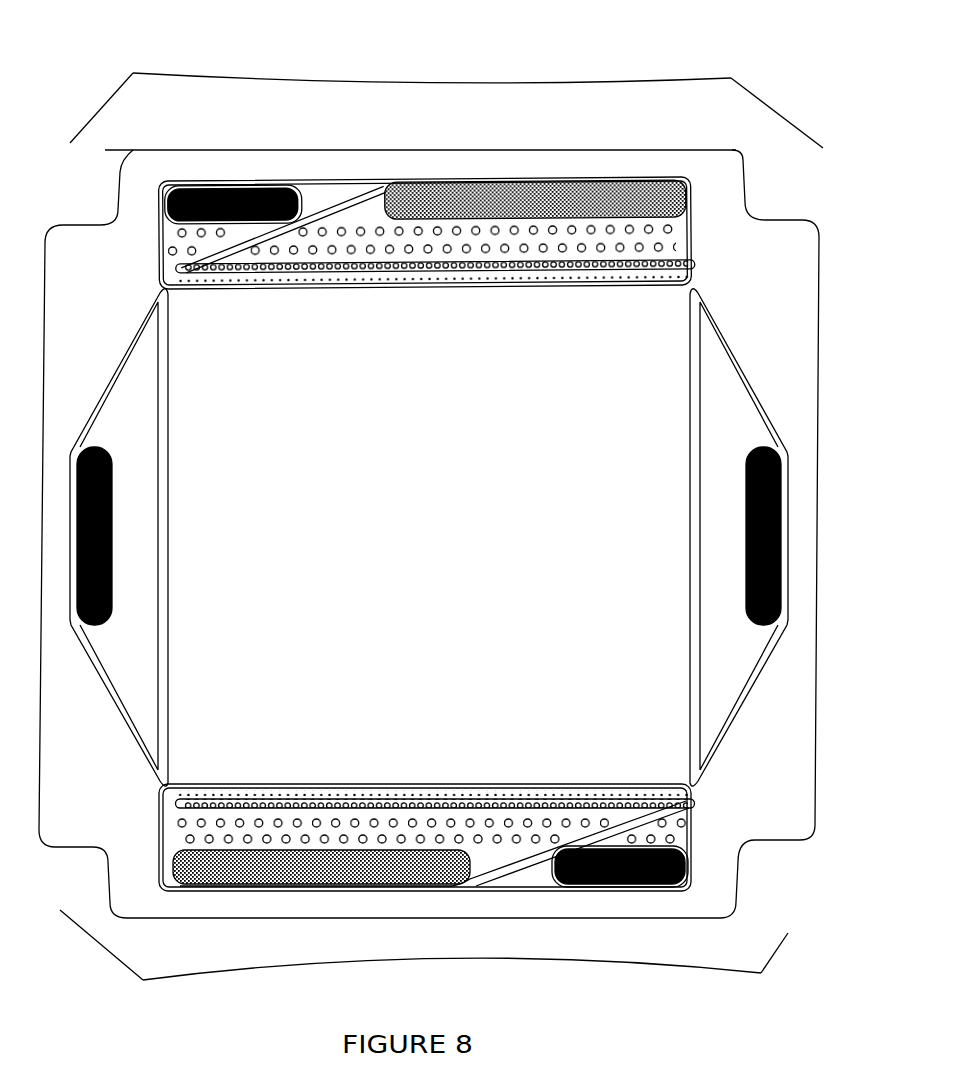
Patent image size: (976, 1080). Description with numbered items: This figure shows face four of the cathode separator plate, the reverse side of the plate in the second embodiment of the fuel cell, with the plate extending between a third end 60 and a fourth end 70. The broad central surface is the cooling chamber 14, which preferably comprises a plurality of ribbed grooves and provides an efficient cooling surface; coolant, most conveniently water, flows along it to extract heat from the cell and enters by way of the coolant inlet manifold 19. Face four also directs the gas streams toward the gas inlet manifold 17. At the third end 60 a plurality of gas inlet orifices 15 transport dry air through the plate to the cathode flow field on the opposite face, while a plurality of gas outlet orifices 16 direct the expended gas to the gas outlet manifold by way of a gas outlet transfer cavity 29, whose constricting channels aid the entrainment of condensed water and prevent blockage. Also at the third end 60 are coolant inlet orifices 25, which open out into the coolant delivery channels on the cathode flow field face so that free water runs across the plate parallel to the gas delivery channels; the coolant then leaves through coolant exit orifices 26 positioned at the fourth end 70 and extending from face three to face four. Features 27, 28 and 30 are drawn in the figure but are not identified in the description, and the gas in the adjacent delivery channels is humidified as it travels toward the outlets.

The cooling chamber 14 is at (578, 703).
The gas inlet orifices 15 is at (247, 800).
The gas outlet orifices 16 is at (668, 262).
The gas inlet manifold 17 is at (227, 887).
The coolant inlet manifold 19 is at (645, 887).
The coolant inlet orifices 25 is at (237, 795).
The coolant exit orifices 26 is at (203, 277).
The seal ring 27 is at (485, 848).
The through holes 28 is at (685, 823).
The gas outlet transfer cavity 29 is at (370, 220).
The bond pad 30 is at (167, 188).
The third end 60 is at (575, 953).
The fourth end 70 is at (440, 78).